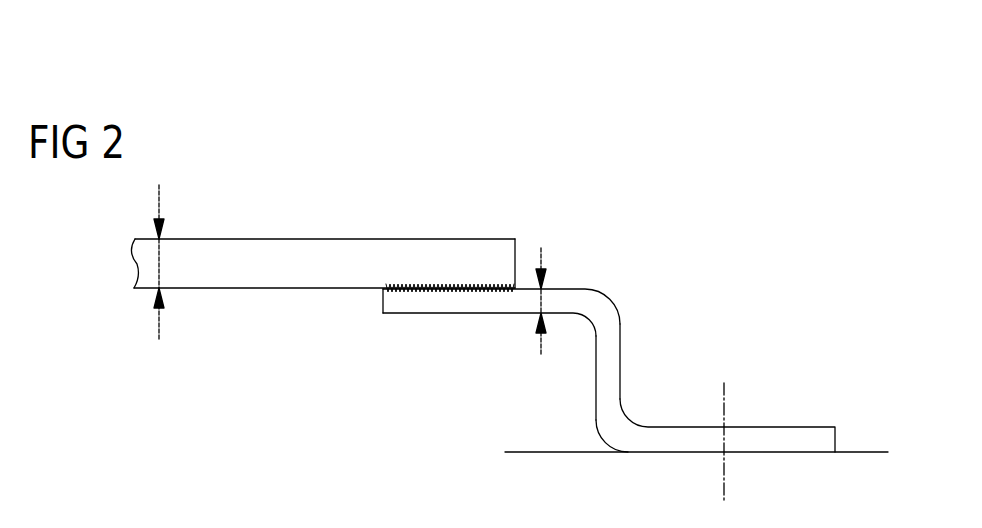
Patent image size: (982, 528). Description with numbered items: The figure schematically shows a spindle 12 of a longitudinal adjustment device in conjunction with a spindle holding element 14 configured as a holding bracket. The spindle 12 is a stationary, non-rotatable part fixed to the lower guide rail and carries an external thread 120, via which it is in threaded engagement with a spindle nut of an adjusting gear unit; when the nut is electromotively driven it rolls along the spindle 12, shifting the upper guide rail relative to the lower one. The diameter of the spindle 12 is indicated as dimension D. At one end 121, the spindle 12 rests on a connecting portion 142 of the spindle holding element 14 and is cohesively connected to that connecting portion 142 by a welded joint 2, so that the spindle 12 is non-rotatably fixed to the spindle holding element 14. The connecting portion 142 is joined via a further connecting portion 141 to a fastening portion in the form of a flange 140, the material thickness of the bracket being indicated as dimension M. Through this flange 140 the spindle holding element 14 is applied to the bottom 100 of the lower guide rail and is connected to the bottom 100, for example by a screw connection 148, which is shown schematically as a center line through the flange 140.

The spindle 12 is at (326, 204).
The external thread 120 is at (229, 252).
The end 121 is at (481, 238).
The welded joint 2 is at (370, 297).
The spindle holding element 14 is at (609, 398).
The connecting portion 142 is at (453, 314).
The connecting portion 141 is at (596, 385).
The fastening portion 140 is at (757, 453).
The screw connection 148 is at (725, 402).
The bottom 100 is at (856, 451).
The diameter D is at (161, 268).
The material thickness M is at (543, 298).